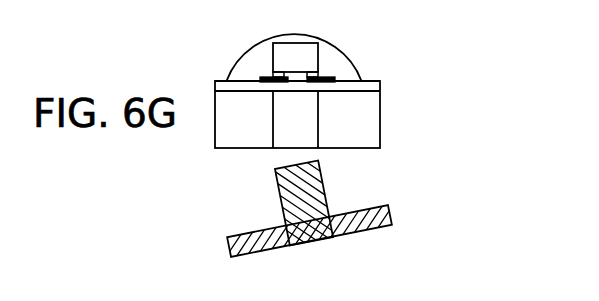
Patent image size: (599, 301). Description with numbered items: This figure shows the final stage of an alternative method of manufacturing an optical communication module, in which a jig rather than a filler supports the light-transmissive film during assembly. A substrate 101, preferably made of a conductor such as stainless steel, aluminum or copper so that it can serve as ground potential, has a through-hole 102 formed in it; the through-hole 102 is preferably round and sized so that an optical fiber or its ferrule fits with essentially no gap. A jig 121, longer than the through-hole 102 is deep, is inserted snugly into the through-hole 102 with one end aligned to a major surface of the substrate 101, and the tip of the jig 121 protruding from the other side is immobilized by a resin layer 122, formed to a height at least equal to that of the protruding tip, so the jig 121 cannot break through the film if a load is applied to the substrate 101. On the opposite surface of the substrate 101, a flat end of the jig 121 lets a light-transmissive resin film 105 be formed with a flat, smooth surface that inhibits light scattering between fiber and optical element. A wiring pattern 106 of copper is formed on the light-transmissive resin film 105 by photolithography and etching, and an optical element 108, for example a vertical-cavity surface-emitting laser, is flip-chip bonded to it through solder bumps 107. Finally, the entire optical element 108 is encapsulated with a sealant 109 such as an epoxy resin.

The substrate 101 is at (365, 120).
The through-hole 102 is at (279, 134).
The light-transmissive resin film 105 is at (364, 86).
The wiring pattern 106 is at (332, 55).
The solder bump 107 is at (277, 75).
The optical element 108 is at (292, 53).
The sealant 109 is at (317, 76).
The jig 121 is at (307, 227).
The resin layer 122 is at (380, 220).